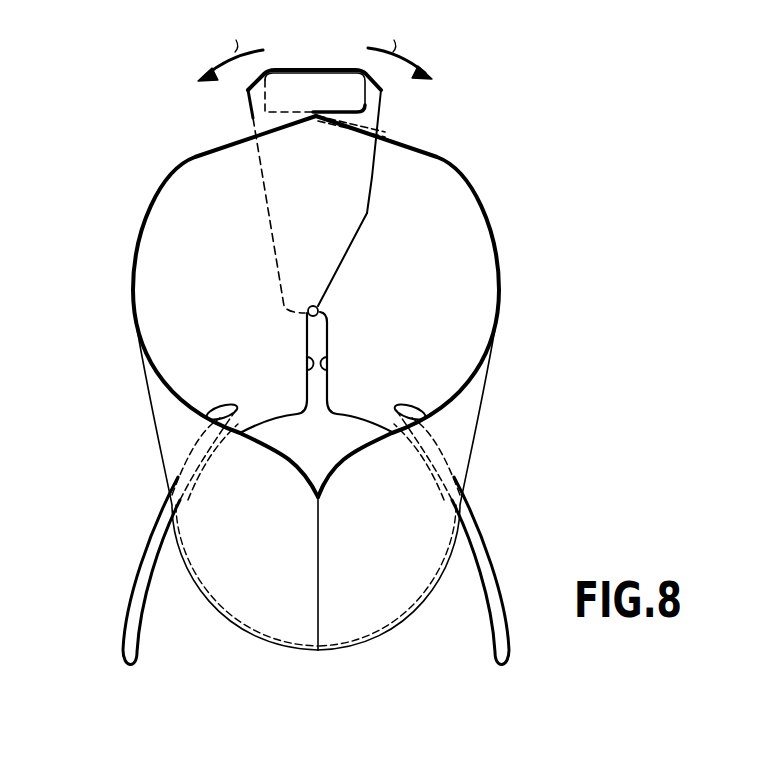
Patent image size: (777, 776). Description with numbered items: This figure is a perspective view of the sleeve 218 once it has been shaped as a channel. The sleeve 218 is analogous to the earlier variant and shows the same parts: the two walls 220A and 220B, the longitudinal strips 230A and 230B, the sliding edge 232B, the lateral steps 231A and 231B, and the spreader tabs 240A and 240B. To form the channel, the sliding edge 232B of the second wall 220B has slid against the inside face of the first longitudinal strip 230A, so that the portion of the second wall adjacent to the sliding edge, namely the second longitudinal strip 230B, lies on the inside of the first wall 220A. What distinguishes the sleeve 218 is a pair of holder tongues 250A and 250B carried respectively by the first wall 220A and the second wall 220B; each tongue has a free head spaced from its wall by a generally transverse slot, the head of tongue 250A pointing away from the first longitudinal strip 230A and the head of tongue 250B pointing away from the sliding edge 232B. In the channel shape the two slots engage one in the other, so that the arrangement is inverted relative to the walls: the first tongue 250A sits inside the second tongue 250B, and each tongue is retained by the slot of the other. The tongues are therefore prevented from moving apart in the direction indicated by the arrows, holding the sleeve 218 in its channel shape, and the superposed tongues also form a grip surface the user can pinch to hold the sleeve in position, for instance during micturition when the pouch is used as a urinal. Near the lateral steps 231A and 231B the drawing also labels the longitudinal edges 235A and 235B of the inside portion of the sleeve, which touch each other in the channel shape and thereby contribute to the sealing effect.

The sleeve 218 is at (130, 165).
The first holder tongue 250A is at (313, 93).
The second holder tongue 250B is at (264, 106).
The first wall 220A is at (452, 247).
The second wall 220B is at (235, 278).
The first longitudinal strip 230A is at (263, 194).
The second longitudinal strip 230B is at (373, 180).
The sliding edge 232B is at (347, 262).
The first lateral step 231A is at (303, 320).
The second lateral step 231B is at (321, 308).
The left detent 235A is at (310, 366).
The right detent 235B is at (327, 366).
The first spreader tab 240A is at (511, 655).
The second spreader tab 240B is at (124, 655).